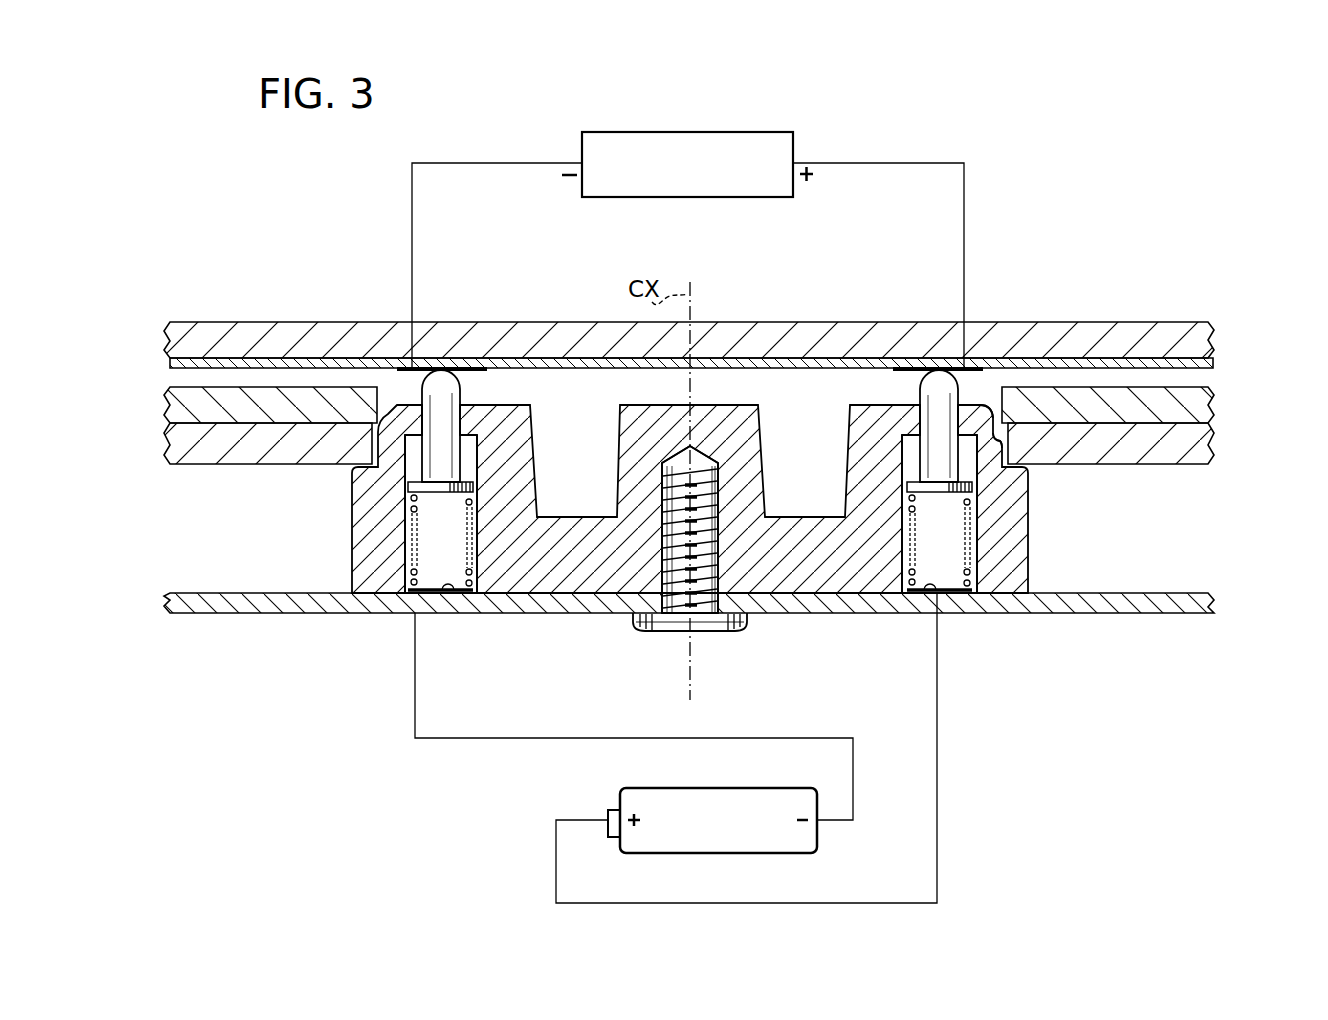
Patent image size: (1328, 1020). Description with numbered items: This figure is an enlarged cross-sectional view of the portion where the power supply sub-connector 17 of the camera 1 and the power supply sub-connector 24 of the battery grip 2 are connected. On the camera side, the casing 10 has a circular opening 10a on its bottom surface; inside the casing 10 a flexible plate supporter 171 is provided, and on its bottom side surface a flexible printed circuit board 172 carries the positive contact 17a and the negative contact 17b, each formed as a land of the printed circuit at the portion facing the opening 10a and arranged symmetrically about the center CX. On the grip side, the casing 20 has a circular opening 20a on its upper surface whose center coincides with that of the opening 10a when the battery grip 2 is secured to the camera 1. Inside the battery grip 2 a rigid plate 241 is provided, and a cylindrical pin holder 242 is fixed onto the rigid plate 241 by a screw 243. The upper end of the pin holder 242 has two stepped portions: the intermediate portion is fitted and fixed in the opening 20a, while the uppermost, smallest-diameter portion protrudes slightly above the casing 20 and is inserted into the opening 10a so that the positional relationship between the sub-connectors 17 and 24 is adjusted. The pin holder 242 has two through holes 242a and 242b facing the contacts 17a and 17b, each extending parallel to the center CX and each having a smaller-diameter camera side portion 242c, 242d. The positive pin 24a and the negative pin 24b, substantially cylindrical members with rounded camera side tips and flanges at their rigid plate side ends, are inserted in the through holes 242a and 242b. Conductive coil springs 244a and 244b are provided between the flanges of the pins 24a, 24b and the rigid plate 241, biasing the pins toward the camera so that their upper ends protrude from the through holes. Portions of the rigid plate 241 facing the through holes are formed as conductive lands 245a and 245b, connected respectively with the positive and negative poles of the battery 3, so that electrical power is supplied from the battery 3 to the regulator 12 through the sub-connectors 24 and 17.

The camera 1 is at (152, 320).
The battery grip 2 is at (152, 425).
The battery 3 is at (710, 808).
The casing 10 is at (1212, 412).
The circular opening 10a is at (991, 399).
The regulator 12 is at (717, 97).
The power supply sub-connector 17 is at (753, 303).
The positive contact 17a is at (905, 372).
The negative contact 17b is at (470, 369).
The casing 20 is at (1212, 448).
The circular opening 20a is at (999, 452).
The power supply sub-connector 24 is at (694, 579).
The positive pin 24a is at (960, 393).
The negative pin 24b is at (466, 372).
The flexible plate supporter 171 is at (1212, 335).
The flexible printed circuit board 172 is at (1212, 365).
The rigid plate 241 is at (1197, 607).
The pin holder 242 is at (1029, 562).
The through hole 242a is at (902, 457).
The through hole 242b is at (407, 468).
The camera side portion 242c is at (925, 398).
The camera side portion 242d is at (423, 400).
The screw 243 is at (680, 632).
The coil spring 244a is at (958, 592).
The coil spring 244b is at (398, 592).
The conductive land 245a is at (920, 594).
The conductive land 245b is at (457, 595).